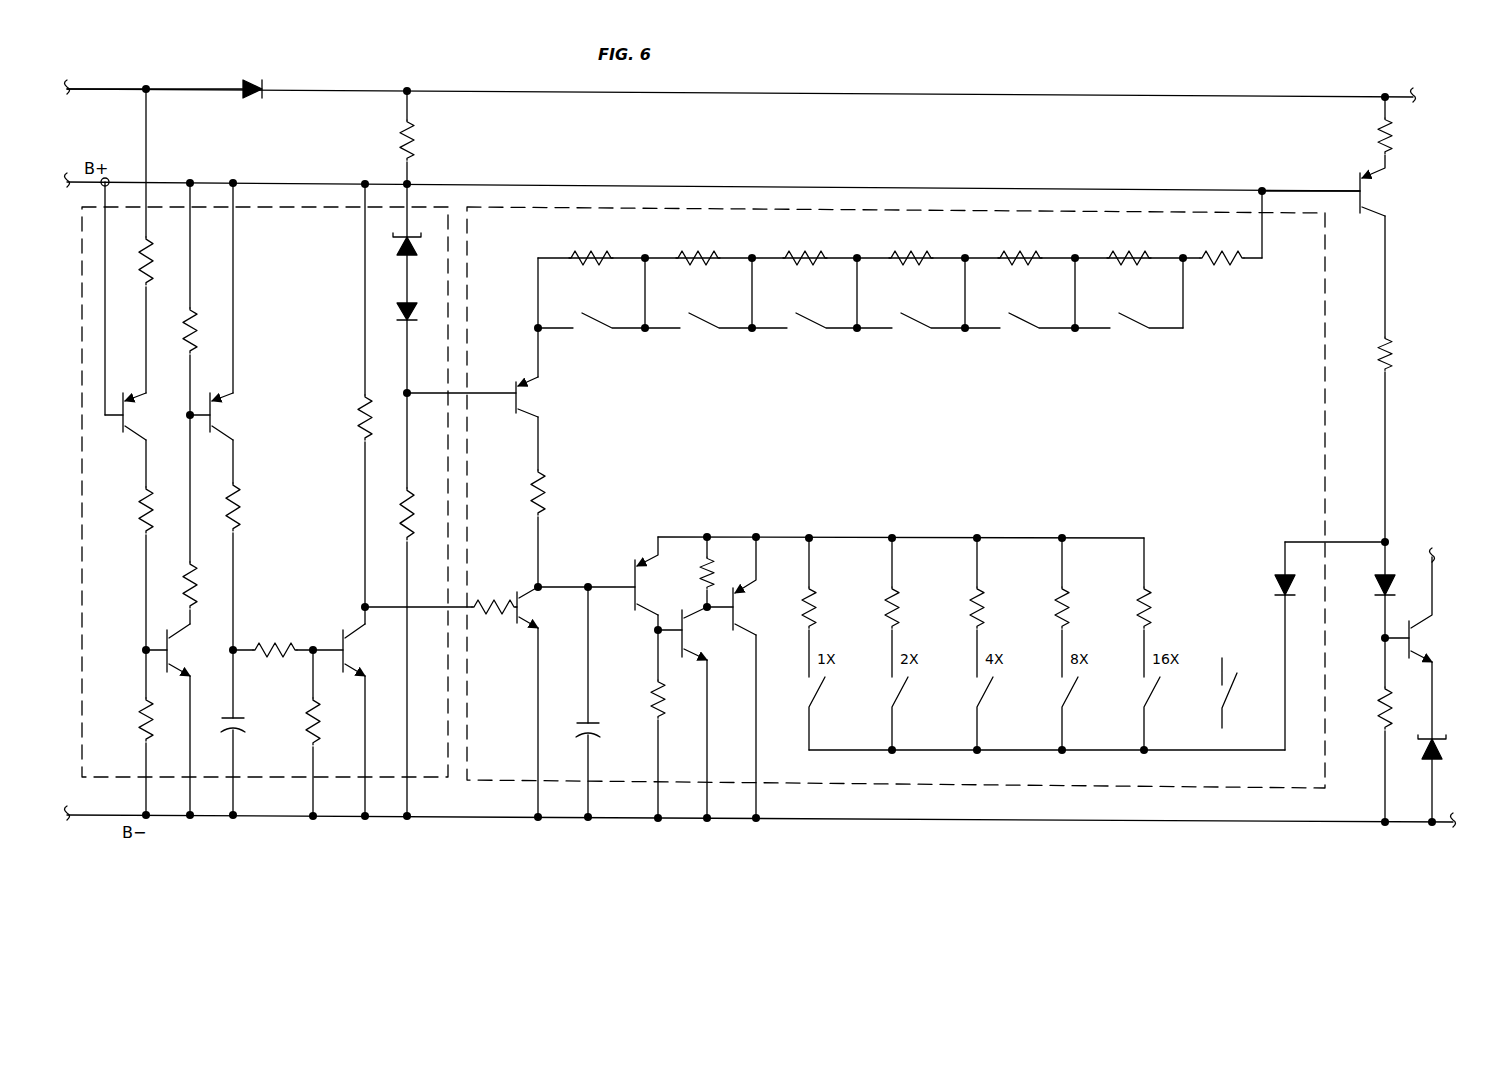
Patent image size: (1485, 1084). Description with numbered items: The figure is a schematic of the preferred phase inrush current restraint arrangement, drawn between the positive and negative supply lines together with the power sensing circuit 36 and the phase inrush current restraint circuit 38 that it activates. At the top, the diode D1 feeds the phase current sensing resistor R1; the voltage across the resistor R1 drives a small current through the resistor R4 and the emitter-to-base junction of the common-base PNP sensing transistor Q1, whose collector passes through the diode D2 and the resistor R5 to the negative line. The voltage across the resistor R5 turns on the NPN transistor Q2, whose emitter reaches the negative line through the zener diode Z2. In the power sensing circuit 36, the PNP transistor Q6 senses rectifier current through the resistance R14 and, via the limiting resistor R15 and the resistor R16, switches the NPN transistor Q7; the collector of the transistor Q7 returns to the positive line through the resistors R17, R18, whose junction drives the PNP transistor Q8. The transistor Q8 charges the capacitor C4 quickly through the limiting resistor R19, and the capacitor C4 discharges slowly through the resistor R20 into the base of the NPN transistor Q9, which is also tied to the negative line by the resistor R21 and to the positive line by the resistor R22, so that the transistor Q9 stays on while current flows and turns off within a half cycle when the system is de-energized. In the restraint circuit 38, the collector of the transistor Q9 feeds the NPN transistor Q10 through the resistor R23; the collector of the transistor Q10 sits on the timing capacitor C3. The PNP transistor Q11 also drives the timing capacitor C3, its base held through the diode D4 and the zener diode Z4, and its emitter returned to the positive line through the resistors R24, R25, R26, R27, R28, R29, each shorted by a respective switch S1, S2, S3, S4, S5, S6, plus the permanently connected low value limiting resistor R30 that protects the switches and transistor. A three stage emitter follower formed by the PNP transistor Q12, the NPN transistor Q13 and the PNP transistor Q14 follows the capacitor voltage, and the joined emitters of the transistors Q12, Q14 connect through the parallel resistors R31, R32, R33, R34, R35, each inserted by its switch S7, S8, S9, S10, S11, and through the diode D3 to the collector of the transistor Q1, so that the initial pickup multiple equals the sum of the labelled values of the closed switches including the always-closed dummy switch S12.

The power sensing circuit 36 is at (452, 212).
The phase inrush current restraint circuit 38 is at (467, 246).
The diode D1 is at (166, 102).
The diode D2 is at (1398, 590).
The diode D3 is at (1315, 646).
The diode D4 is at (419, 348).
The zener diode Z2 is at (1442, 778).
The zener diode Z4 is at (413, 243).
The timing capacitor C3 is at (597, 702).
The capacitor C4 is at (242, 732).
The phase overcurrent sensing PNP transistor Q1 is at (1326, 246).
The NPN transistor Q2 is at (1413, 648).
The PNP transistor Q6 is at (138, 363).
The NPN transistor Q7 is at (173, 712).
The PNP transistor Q8 is at (215, 311).
The NPN transistor Q9 is at (343, 711).
The NPN transistor Q10 is at (536, 702).
The PNP transistor Q11 is at (481, 372).
The PNP transistor Q12 is at (655, 583).
The NPN transistor Q13 is at (690, 712).
The PNP transistor Q14 is at (740, 677).
The phase current sensing resistor R1 is at (419, 137).
The resistor R4 is at (1398, 125).
The resistor R5 is at (1398, 730).
The resistance R14 is at (163, 187).
The limiting resistor R15 is at (125, 545).
The resistor R16 is at (125, 732).
The resistor R17 is at (207, 511).
The resistor R18 is at (207, 299).
The limiting resistor R19 is at (251, 545).
The resistor R20 is at (273, 641).
The resistor R21 is at (330, 733).
The resistor R22 is at (344, 395).
The resistor R23 is at (441, 598).
The resistor R24 is at (591, 248).
The resistor R25 is at (698, 248).
The resistor R26 is at (805, 248).
The resistor R27 is at (911, 248).
The resistor R28 is at (1020, 248).
The resistor R29 is at (1129, 248).
The limiting resistor R30 is at (1221, 248).
The resistor R31 is at (826, 583).
The resistor R32 is at (909, 583).
The resistor R33 is at (994, 583).
The resistor R34 is at (1079, 583).
The resistor R35 is at (1161, 583).
The shorting switch S1 is at (591, 323).
The shorting switch S2 is at (698, 323).
The shorting switch S3 is at (804, 323).
The shorting switch S4 is at (911, 323).
The shorting switch S5 is at (1020, 323).
The shorting switch S6 is at (1129, 323).
The switch S7 is at (801, 690).
The switch S8 is at (884, 690).
The switch S9 is at (969, 690).
The switch S10 is at (1051, 690).
The switch S11 is at (1135, 690).
The dummy switch S12 is at (1218, 690).